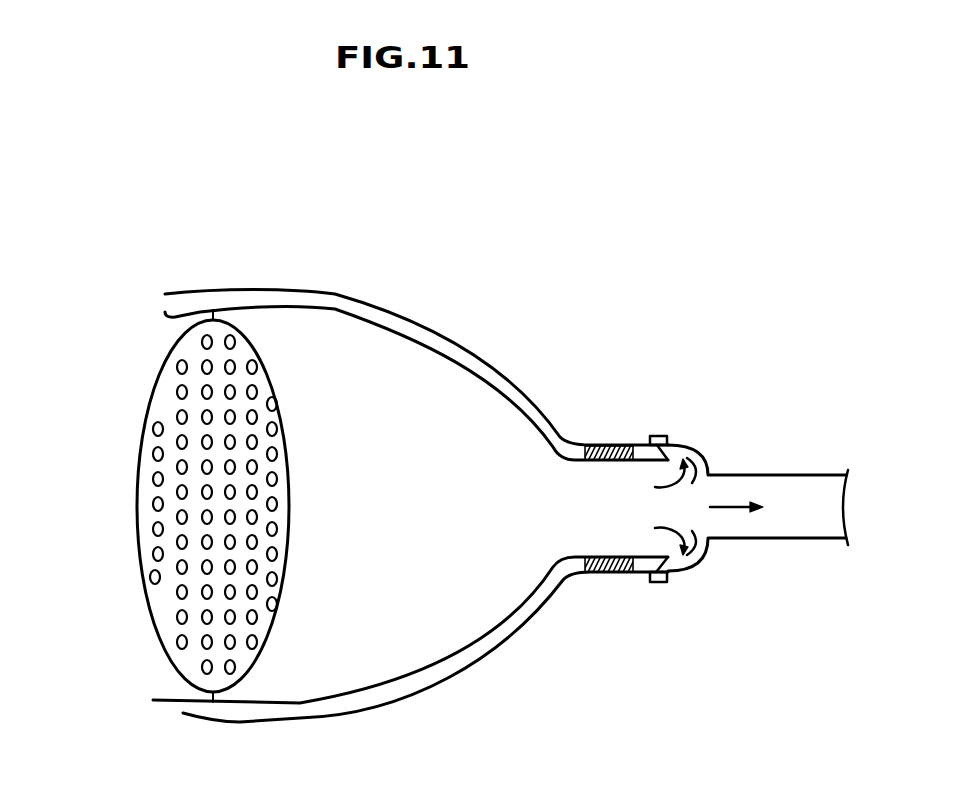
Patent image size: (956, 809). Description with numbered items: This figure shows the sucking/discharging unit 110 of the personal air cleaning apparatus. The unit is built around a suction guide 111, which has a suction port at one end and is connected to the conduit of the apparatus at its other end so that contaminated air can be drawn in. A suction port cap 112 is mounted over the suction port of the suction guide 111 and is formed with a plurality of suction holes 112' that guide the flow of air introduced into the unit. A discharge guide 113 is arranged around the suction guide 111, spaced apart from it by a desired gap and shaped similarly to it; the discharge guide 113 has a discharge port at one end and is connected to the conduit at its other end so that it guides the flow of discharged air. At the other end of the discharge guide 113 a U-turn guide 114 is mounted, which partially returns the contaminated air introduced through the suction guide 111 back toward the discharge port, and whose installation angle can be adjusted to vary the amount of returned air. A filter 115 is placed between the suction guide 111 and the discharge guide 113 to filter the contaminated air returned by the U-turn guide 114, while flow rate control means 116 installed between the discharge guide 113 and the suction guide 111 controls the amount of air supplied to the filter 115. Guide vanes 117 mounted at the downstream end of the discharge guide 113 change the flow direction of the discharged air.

The sucking/discharging unit 110 is at (416, 298).
The suction guide 111 is at (333, 312).
The suction port cap 112 is at (168, 506).
The suction holes 112' is at (112, 589).
The discharge guide 113 is at (272, 291).
The U-turn guide 114 is at (703, 445).
The filter 115 is at (610, 444).
The flow rate control means 116 is at (657, 436).
The guide vanes 117 is at (163, 702).